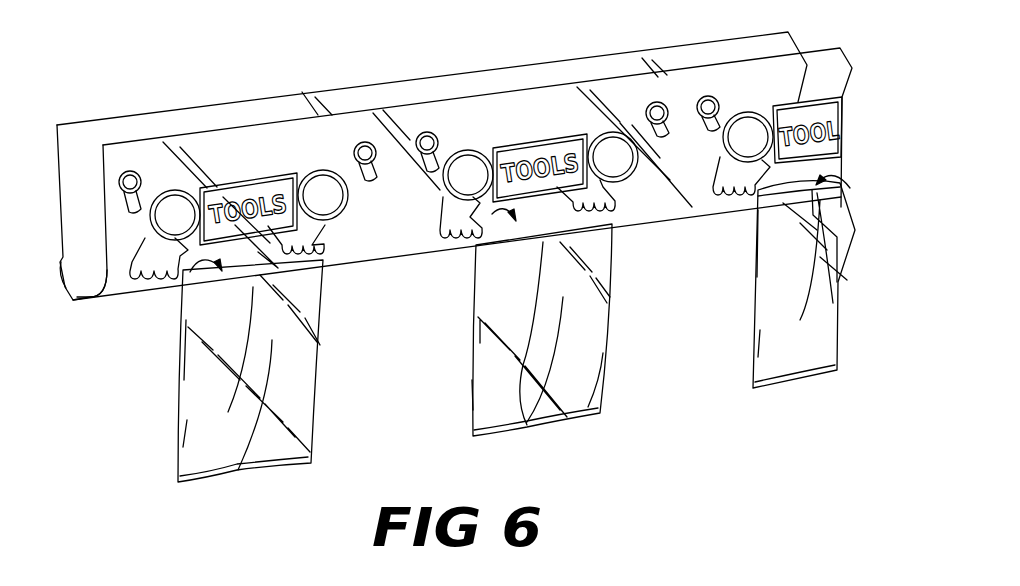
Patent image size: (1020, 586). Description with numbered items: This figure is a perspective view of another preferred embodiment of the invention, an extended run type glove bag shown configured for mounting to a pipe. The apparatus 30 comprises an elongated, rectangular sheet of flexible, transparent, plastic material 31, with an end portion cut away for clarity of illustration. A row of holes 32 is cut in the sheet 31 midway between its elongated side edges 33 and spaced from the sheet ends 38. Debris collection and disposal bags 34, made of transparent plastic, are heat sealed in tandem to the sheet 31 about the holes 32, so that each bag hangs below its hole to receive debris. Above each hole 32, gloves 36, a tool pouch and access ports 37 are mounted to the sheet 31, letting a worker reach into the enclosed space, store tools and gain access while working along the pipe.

The apparatus 30 is at (267, 91).
The sheet of flexible, transparent, plastic material 31 is at (633, 203).
The holes 32 is at (187, 275).
The side edges 33 is at (458, 97).
The debris collection and disposal bags 34 is at (326, 305).
The gloves 36 is at (127, 297).
The access ports 37 is at (128, 171).
The sheet ends 38 is at (66, 286).